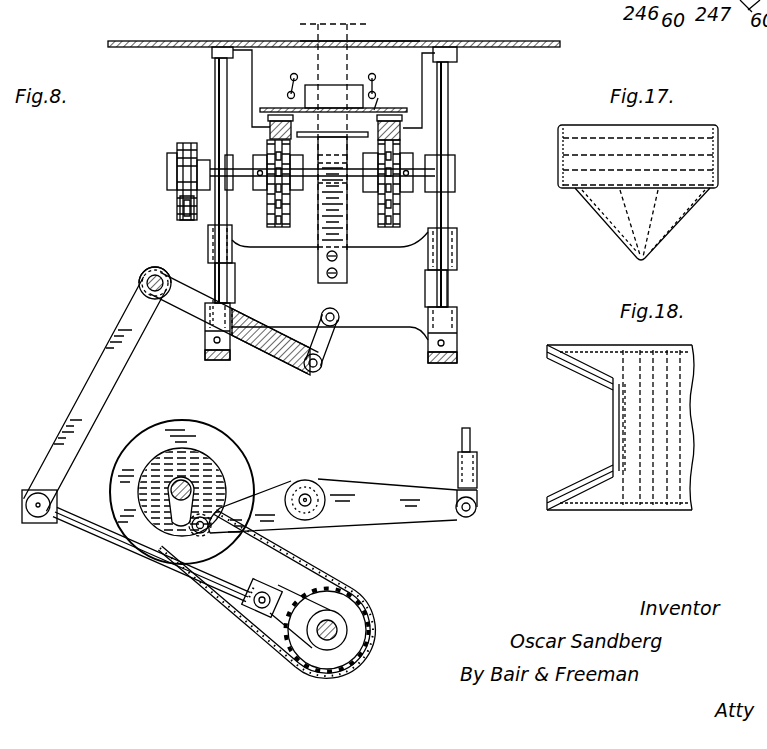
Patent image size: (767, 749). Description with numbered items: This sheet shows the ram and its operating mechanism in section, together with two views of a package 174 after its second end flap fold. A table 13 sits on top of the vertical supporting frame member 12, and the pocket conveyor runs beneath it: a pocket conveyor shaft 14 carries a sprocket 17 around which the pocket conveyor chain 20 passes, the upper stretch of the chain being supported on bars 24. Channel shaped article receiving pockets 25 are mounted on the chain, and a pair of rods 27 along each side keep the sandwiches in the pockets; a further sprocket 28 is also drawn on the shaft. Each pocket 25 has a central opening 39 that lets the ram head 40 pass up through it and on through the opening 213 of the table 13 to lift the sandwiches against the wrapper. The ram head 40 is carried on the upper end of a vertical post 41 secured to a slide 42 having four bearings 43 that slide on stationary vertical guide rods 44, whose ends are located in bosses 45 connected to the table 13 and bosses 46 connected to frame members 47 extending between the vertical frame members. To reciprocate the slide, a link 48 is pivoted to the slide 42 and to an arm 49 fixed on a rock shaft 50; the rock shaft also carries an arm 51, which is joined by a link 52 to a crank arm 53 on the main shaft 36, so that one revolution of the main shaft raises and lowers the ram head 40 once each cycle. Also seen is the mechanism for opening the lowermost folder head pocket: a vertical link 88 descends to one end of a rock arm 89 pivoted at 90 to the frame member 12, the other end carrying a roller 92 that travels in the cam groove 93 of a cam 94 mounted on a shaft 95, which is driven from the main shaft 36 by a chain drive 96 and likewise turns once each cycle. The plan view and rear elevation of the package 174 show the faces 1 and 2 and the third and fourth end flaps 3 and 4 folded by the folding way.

In FIG. 17, the outer face of confection 1 is at (688, 194).
In FIG. 18, the outer face of confection 1 is at (620, 440).
In FIG. 17, the side face of confection 2 is at (617, 199).
In FIG. 18, the side face of confection 2 is at (612, 413).
In FIG. 18, the third end flap 3 is at (562, 492).
In FIG. 17, the fourth end flap 4 is at (653, 228).
In FIG. 18, the fourth end flap 4 is at (570, 369).
In FIG. 8, the supporting frame member 12 is at (164, 262).
In FIG. 8, the table 13 is at (172, 47).
In FIG. 8, the pocket conveyor shaft 14 is at (167, 176).
In FIG. 8, the sprocket 17 is at (285, 205).
In FIG. 8, the pocket conveyor chain 20 is at (268, 118).
In FIG. 8, the bar 24 is at (270, 132).
In FIG. 8, the article receiving pocket 25 is at (333, 98).
In FIG. 8, the rod 27 is at (289, 77).
In FIG. 8, the chain sprocket 28 is at (177, 211).
In FIG. 8, the main shaft 36 is at (323, 636).
In FIG. 8, the central opening 39 is at (379, 100).
In FIG. 8, the ram head 40 is at (300, 24).
In FIG. 8, the vertical post 41 is at (332, 207).
In FIG. 8, the slide 42 is at (330, 286).
In FIG. 8, the bearing 43 is at (215, 241).
In FIG. 8, the vertical guide rod 44 is at (215, 89).
In FIG. 8, the boss 45 is at (212, 53).
In FIG. 8, the boss 46 is at (205, 344).
In FIG. 8, the frame member 47 is at (220, 361).
In FIG. 8, the link 48 is at (324, 346).
In FIG. 8, the arm 49 is at (258, 358).
In FIG. 8, the rock shaft 50 is at (139, 283).
In FIG. 8, the arm 51 is at (106, 389).
In FIG. 8, the link 52 is at (118, 553).
In FIG. 8, the crank arm 53 is at (282, 619).
In FIG. 8, the vertical link 88 is at (460, 441).
In FIG. 8, the rock arm 89 is at (333, 506).
In FIG. 8, the pivot 90 is at (311, 497).
In FIG. 8, the roller 92 is at (215, 541).
In FIG. 8, the cam groove 93 is at (218, 473).
In FIG. 8, the cam 94 is at (230, 446).
In FIG. 8, the shaft 95 is at (165, 489).
In FIG. 8, the chain drive 96 is at (326, 571).
In FIG. 17, the package 174 is at (550, 178).
In FIG. 18, the package 174 is at (581, 338).
In FIG. 8, the opening 213 is at (365, 46).